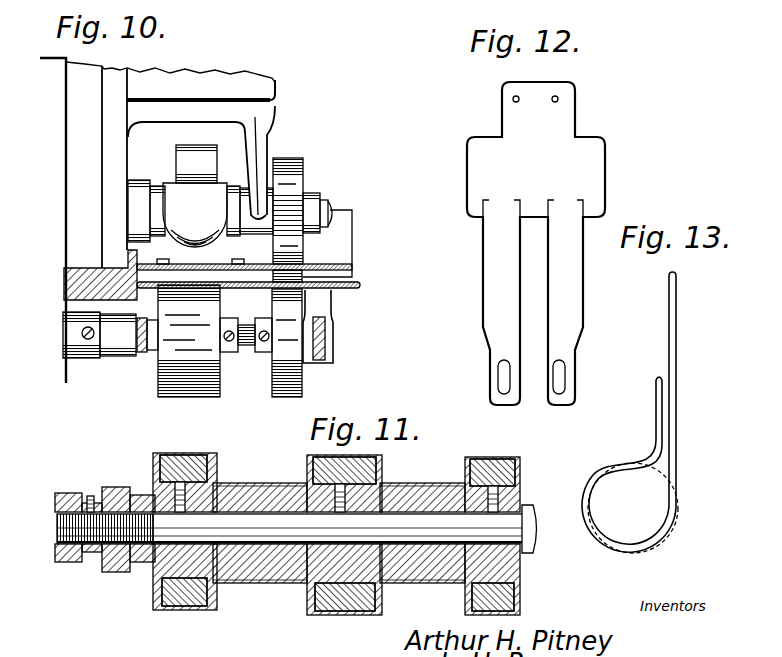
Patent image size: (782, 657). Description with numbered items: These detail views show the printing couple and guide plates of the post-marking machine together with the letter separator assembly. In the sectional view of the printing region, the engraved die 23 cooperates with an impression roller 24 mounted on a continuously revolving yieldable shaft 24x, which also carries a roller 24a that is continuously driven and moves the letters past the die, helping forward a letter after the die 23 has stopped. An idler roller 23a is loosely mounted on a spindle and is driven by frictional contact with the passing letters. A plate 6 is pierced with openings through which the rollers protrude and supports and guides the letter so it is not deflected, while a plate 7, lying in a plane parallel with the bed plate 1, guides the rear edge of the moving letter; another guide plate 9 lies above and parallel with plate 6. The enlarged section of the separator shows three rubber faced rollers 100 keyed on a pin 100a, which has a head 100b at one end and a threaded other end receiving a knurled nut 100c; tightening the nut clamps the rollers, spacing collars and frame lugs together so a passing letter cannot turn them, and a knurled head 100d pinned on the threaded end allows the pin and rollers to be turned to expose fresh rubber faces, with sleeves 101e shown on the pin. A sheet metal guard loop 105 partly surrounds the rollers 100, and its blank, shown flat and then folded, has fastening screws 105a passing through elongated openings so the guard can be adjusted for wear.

In FIG. 10, the bed plate 1 is at (20, 392).
In FIG. 10, the plate 6 is at (360, 287).
In FIG. 10, the plate 7 is at (128, 303).
In FIG. 10, the guide plate 9 is at (340, 266).
In FIG. 10, the engraved die 23 is at (178, 166).
In FIG. 10, the idler roller 23a is at (303, 176).
In FIG. 10, the impression roller 24 is at (218, 390).
In FIG. 10, the roller 24a is at (303, 389).
In FIG. 10, the yieldable shaft 24x is at (248, 348).
In FIG. 13, the rubber faced rollers 100 is at (678, 515).
In FIG. 11, the rubber faced rollers 100 is at (163, 460).
In FIG. 11, the pin 100a is at (527, 554).
In FIG. 11, the head 100b is at (529, 516).
In FIG. 11, the knurled nut 100c is at (102, 567).
In FIG. 11, the knurled head 100d is at (56, 499).
In FIG. 11, the sleeve 101e is at (252, 573).
In FIG. 12, the sheet metal guard loop 105 is at (590, 173).
In FIG. 13, the sheet metal guard loop 105 is at (677, 413).
In FIG. 11, the sheet metal guard loop 105 is at (265, 483).
In FIG. 12, the fastening screws 105a is at (558, 394).